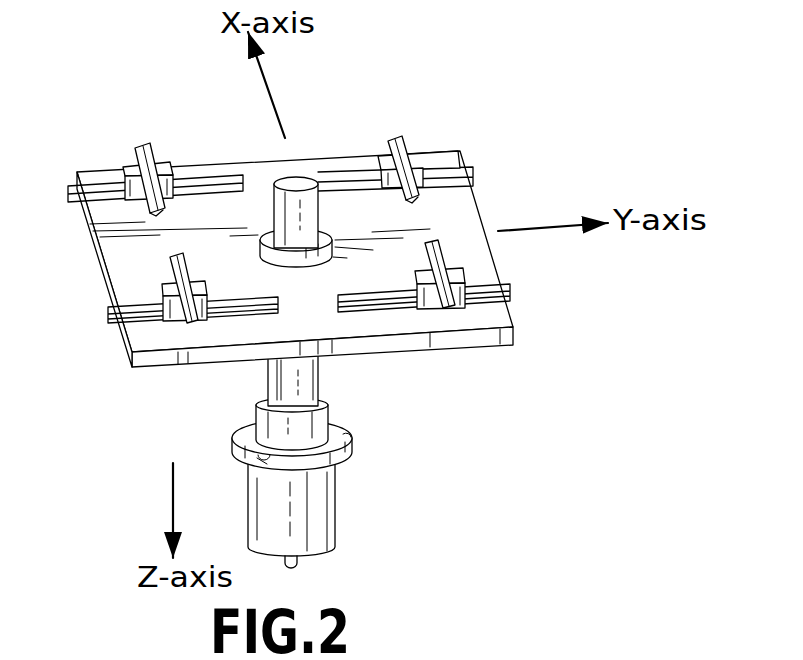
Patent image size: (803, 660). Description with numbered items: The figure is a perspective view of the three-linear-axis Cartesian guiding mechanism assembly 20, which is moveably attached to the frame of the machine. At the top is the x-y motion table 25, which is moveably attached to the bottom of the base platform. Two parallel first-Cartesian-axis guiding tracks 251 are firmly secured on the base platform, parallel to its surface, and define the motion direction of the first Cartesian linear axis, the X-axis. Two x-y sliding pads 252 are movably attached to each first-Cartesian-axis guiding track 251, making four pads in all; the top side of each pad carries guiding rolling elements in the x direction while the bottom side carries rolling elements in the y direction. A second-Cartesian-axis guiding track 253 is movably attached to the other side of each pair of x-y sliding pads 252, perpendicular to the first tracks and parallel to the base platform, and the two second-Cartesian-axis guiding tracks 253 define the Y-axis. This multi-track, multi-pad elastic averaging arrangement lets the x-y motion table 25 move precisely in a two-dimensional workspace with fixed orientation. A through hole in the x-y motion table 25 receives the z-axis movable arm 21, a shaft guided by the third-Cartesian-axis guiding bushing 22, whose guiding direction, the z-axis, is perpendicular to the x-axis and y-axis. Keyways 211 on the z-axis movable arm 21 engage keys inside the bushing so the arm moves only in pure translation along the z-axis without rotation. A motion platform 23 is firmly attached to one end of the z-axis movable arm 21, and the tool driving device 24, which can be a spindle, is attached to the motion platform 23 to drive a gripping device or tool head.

The three-linear-axis Cartesian guiding mechanism assembly 20 is at (460, 223).
The z-axis movable arm 21 is at (327, 395).
The keyways 211 is at (262, 372).
The third-Cartesian-axis guiding bushing 22 is at (333, 240).
The motion platform 23 is at (333, 465).
The tool driving device 24 is at (318, 528).
The x-y motion table 25 is at (132, 357).
The first-Cartesian-axis guiding tracks 251 is at (170, 263).
The x-y sliding pads 252 is at (171, 169).
The second-Cartesian-axis guiding tracks 253 is at (157, 170).